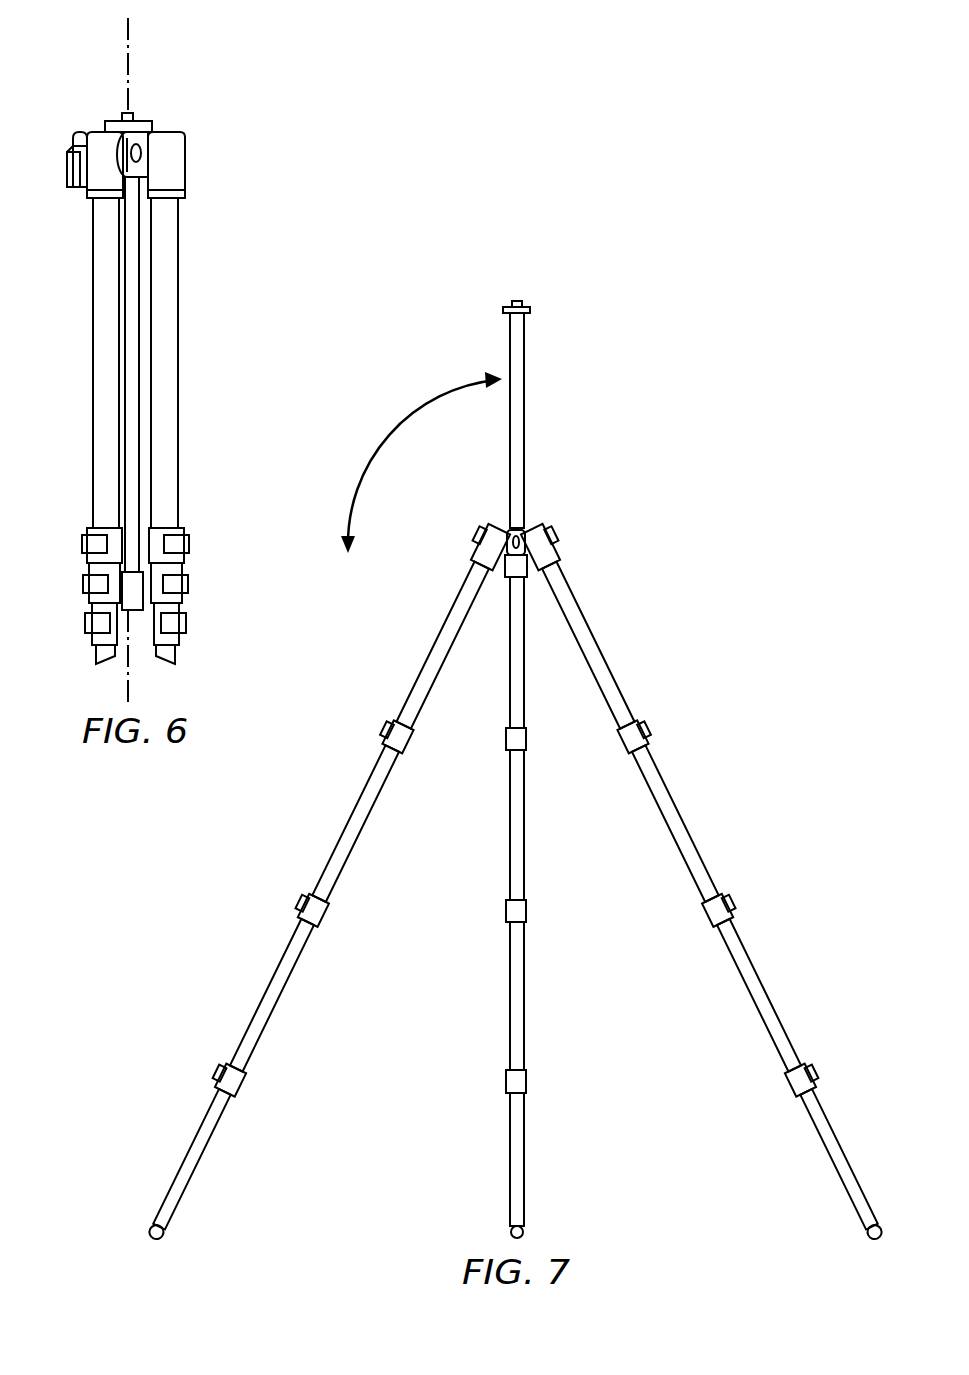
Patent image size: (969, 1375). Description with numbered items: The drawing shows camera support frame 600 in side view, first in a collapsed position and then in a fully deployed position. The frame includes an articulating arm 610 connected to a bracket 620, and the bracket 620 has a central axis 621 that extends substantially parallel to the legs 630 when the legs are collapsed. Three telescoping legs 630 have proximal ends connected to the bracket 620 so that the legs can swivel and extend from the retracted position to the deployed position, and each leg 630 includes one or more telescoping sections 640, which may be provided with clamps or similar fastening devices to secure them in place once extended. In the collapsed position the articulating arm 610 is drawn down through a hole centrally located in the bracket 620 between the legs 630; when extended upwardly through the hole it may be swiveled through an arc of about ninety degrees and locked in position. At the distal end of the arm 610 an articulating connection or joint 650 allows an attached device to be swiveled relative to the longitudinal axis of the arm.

In FIG. 6, the camera support frame 600 is at (229, 258).
In FIG. 7, the camera support frame 600 is at (736, 632).
In FIG. 6, the articulating arm 610 is at (140, 346).
In FIG. 7, the articulating arm 610 is at (526, 422).
In FIG. 6, the bracket 620 is at (186, 168).
In FIG. 7, the bracket 620 is at (553, 543).
In FIG. 6, the central axis 621 is at (130, 33).
In FIG. 6, the telescoping legs 630 is at (92, 300).
In FIG. 7, the telescoping legs 630 is at (350, 823).
In FIG. 7, the telescoping sections 640 is at (682, 827).
In FIG. 6, the articulating connection or joint 650 is at (152, 124).
In FIG. 7, the articulating connection or joint 650 is at (531, 312).